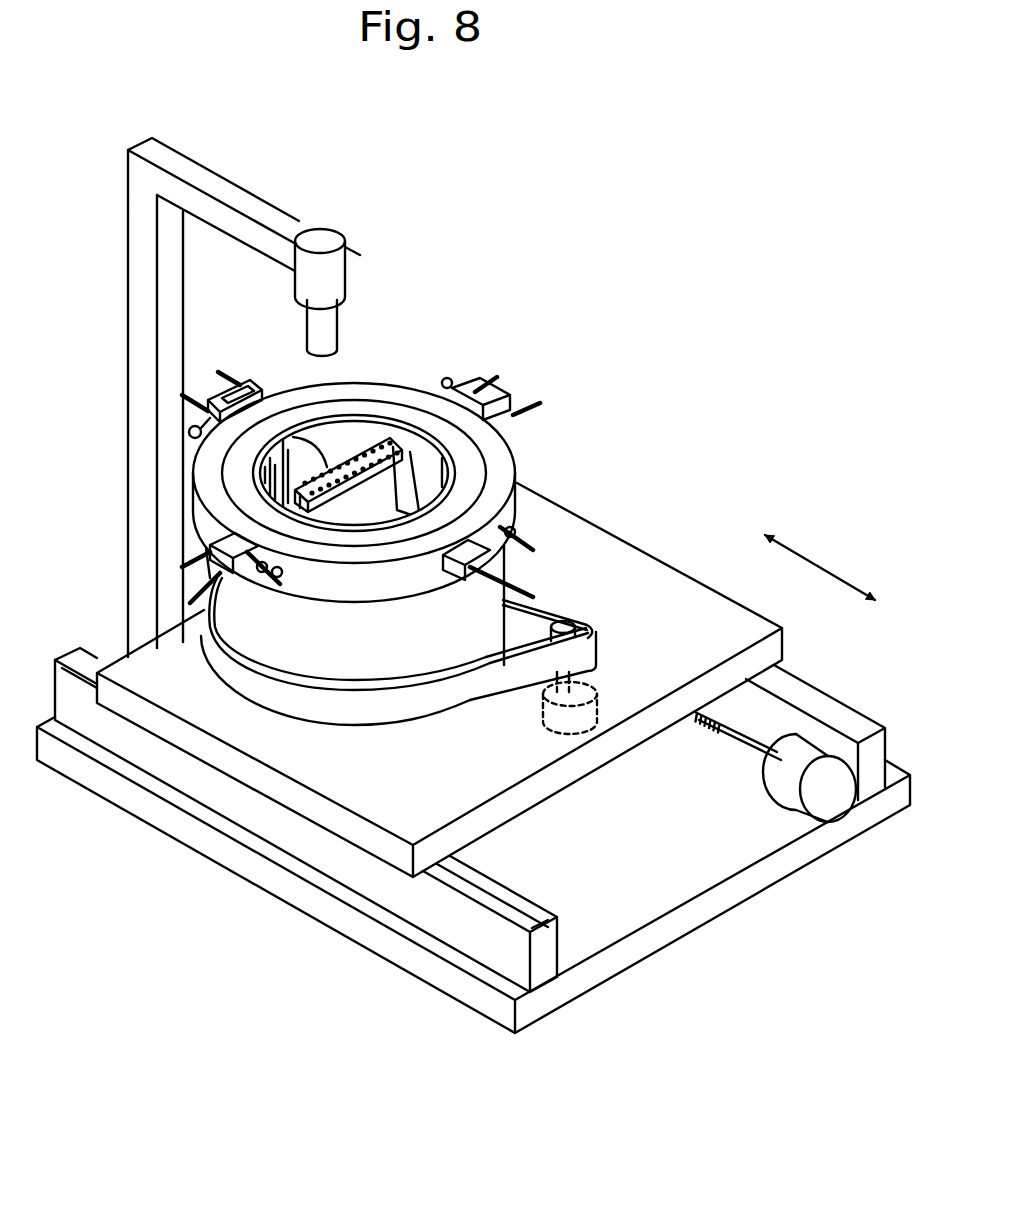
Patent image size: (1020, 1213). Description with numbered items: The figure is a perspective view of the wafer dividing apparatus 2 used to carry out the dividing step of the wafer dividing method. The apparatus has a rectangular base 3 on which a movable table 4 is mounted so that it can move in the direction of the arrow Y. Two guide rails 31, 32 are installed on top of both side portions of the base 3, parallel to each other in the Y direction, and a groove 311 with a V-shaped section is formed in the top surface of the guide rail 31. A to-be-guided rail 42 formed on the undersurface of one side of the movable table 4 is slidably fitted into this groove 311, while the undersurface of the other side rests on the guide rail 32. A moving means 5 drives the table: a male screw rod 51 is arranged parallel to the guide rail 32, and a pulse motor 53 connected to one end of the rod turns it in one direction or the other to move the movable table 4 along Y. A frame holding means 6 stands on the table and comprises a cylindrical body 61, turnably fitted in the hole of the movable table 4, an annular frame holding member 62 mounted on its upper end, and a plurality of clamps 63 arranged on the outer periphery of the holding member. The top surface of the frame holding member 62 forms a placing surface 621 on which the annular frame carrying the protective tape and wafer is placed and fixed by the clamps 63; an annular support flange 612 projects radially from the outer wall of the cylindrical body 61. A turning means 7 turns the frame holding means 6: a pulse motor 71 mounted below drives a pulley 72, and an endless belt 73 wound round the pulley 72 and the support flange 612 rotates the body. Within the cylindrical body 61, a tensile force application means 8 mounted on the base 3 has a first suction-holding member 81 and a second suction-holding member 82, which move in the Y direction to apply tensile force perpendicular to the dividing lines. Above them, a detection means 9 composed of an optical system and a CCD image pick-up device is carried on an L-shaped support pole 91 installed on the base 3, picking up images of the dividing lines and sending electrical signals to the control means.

The wafer dividing apparatus 2 is at (676, 366).
The base 3 is at (239, 878).
The guide rail 31 is at (483, 930).
The groove 311 is at (73, 660).
The guide rail 32 is at (822, 700).
The movable table 4 is at (679, 566).
The to-be-guided rail 42 is at (466, 870).
The moving means 5 is at (738, 756).
The male screw rod 51 is at (711, 724).
The pulse motor 53 is at (830, 797).
The frame holding means 6 is at (358, 380).
The cylindrical body 61 is at (240, 620).
The annular support flange 612 is at (252, 668).
The annular frame holding member 62 is at (320, 383).
The placing surface 621 is at (506, 470).
The clamps 63 is at (241, 390).
The turning means 7 is at (523, 712).
The pulse motor 71 is at (598, 707).
The pulley 72 is at (572, 627).
The endless belt 73 is at (398, 712).
The tensile force application means 8 is at (397, 440).
The first suction-holding member 81 is at (397, 488).
The second suction-holding member 82 is at (293, 437).
The detection means 9 is at (327, 241).
The support column 91 is at (130, 305).